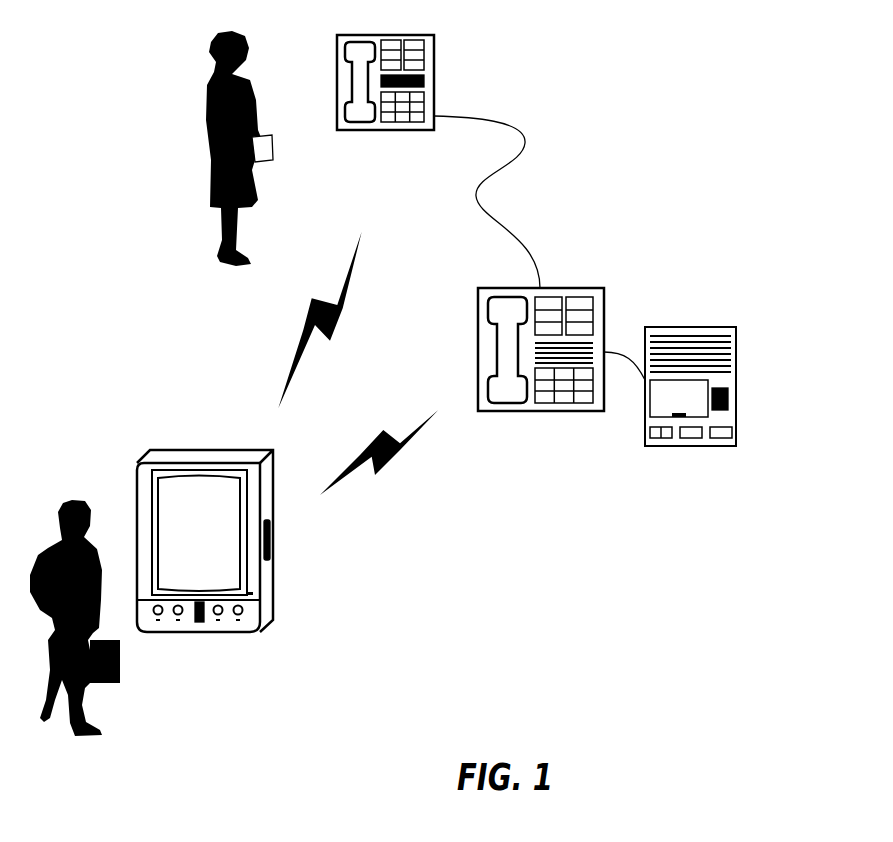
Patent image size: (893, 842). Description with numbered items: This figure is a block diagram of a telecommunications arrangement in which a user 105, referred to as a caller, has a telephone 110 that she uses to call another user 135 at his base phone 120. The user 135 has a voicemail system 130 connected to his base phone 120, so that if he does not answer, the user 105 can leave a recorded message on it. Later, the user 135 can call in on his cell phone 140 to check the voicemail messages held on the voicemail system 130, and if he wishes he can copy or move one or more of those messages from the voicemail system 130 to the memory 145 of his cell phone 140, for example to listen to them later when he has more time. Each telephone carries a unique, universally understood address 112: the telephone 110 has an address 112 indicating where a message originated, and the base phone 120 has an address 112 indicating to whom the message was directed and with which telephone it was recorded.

The user 105 is at (218, 254).
The telephone 110 is at (383, 109).
The address 112 is at (434, 62).
The base phone 120 is at (523, 408).
The voicemail system 130 is at (677, 446).
The user 135 is at (63, 728).
The cell phone 140 is at (205, 594).
The memory 145 is at (270, 545).